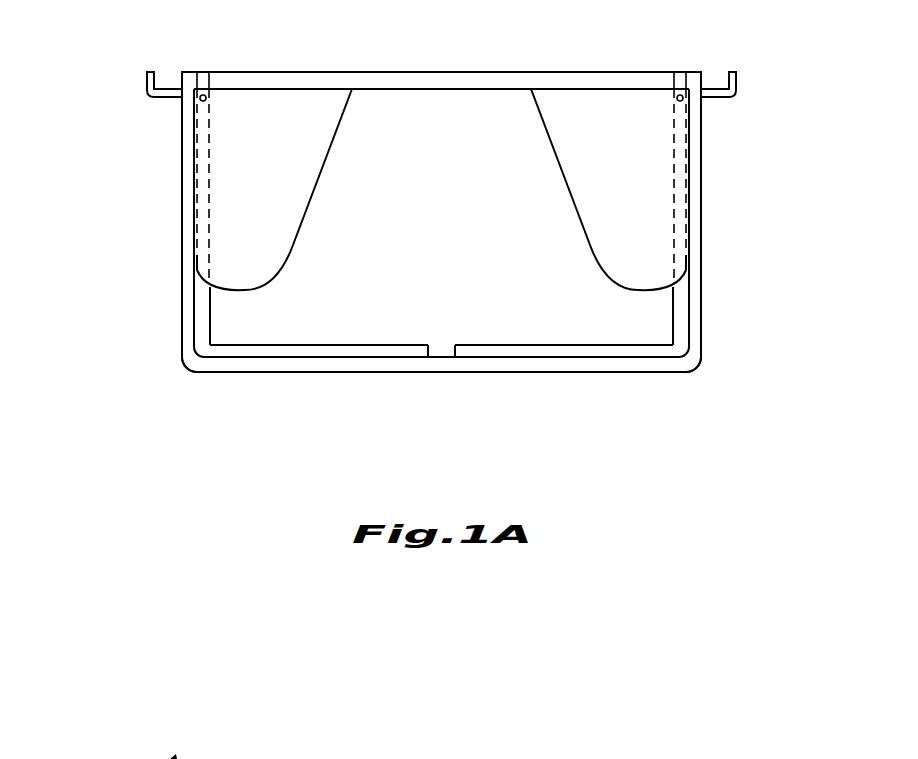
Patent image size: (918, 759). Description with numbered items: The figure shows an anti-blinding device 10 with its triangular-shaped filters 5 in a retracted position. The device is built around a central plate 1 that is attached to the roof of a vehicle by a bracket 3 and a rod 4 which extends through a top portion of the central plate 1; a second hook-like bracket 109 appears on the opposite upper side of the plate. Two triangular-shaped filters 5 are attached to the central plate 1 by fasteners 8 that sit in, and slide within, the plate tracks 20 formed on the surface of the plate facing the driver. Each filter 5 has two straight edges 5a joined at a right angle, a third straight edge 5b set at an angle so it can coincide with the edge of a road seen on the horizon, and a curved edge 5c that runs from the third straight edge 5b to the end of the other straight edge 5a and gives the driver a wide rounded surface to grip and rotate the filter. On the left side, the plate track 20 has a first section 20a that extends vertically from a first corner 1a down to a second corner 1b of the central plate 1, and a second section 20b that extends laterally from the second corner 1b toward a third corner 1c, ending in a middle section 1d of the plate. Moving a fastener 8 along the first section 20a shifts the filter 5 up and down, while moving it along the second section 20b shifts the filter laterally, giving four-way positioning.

The central plate 1 is at (702, 241).
The first corner 1a is at (187, 78).
The second corner 1b is at (189, 364).
The third corner 1c is at (691, 364).
The middle section 1d is at (436, 355).
The bracket 3 is at (146, 82).
The rod 4 is at (167, 96).
The triangular-shaped filter 5 is at (441, 160).
The straight edge 5a is at (198, 155).
The third straight edge 5b is at (323, 170).
The curved edge 5c is at (257, 289).
The fastener 8 is at (205, 96).
The anti-blinding device 10 is at (97, 63).
The plate track 20 is at (403, 248).
The first section 20a is at (201, 302).
The second section 20b is at (310, 350).
The right hanging hook 109 is at (710, 75).